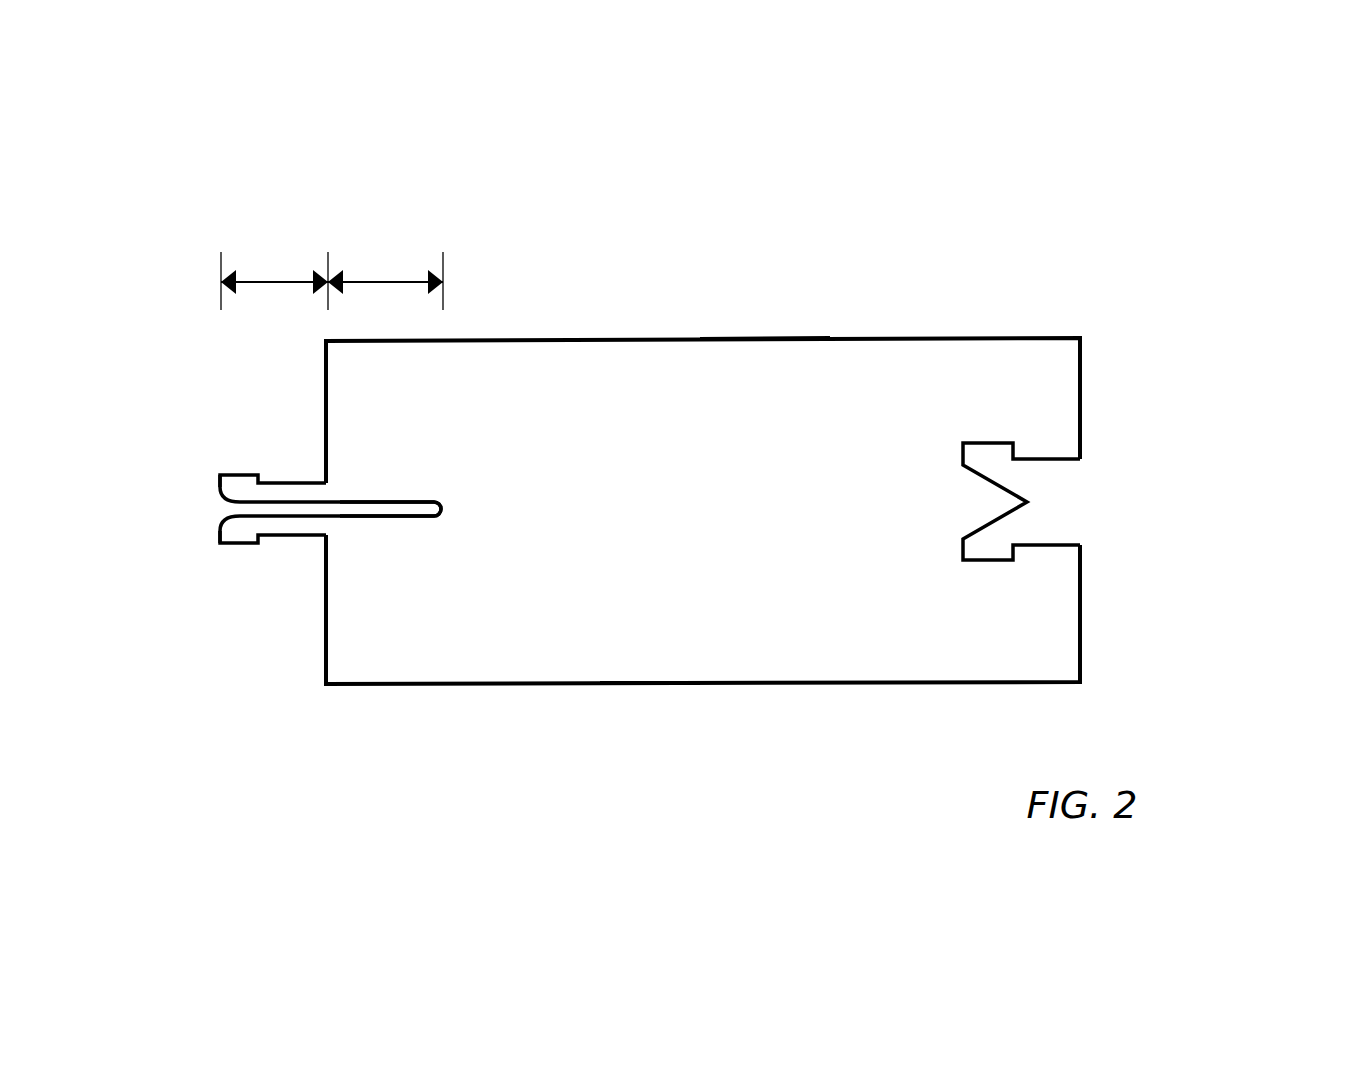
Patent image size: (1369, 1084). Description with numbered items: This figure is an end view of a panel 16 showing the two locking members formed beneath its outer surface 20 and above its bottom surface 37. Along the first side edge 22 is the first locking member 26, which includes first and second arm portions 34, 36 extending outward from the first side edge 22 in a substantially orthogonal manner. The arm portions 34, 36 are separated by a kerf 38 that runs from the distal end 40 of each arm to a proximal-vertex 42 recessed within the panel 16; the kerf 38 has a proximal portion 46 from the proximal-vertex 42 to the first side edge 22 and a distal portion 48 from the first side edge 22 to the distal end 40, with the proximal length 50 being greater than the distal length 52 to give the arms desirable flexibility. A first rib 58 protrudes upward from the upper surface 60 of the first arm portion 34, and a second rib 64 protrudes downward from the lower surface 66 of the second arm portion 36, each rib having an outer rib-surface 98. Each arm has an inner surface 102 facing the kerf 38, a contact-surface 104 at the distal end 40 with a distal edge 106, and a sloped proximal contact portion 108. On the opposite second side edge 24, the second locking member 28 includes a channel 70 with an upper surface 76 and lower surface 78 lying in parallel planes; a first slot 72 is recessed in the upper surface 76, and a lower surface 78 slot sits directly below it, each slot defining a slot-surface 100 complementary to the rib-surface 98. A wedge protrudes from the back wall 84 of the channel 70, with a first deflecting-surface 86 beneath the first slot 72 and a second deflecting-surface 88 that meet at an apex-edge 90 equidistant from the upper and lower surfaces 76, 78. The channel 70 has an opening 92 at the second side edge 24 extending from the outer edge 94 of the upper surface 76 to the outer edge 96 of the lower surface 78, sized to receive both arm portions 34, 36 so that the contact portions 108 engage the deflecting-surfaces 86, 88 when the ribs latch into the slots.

The first panel 16 is at (648, 450).
The outer surface 20 is at (766, 338).
The first side edge 22 is at (325, 663).
The second side edge 24 is at (1082, 410).
The first locking member 26 is at (340, 492).
The second locking member 28 is at (1075, 497).
The first arm portion 34 is at (280, 502).
The second arm portion 36 is at (258, 475).
The bottom surface 37 is at (650, 684).
The kerf 38 is at (425, 502).
The distal end 40 is at (220, 478).
The proximal-vertex 42 is at (440, 502).
The proximal portion 46 is at (436, 516).
The distal portion 48 is at (321, 516).
The proximal length 50 is at (385, 279).
The distal length 52 is at (274, 281).
The first rib 58 is at (237, 477).
The upper surface 60 is at (297, 502).
The second rib 64 is at (228, 541).
The lower surface 66 is at (280, 516).
The channel 70 is at (1038, 533).
The first slot 72 is at (976, 452).
The upper surface 76 is at (1033, 450).
The lower surface 78 is at (1062, 545).
The back wall 84 is at (973, 455).
The first deflecting-surface 86 is at (1013, 485).
The second deflecting-surface 88 is at (1040, 545).
The apex-edge 90 is at (1029, 504).
The opening 92 is at (1076, 469).
The outer edge 94 is at (1082, 458).
The outer edge 96 is at (1083, 545).
The rib-surface 98 is at (255, 483).
The slot-surface 100 is at (1016, 443).
The inner surface 102 is at (391, 516).
The contact-surface 104 is at (238, 502).
The distal edge 106 is at (220, 485).
The proximal contact portion 108 is at (240, 500).